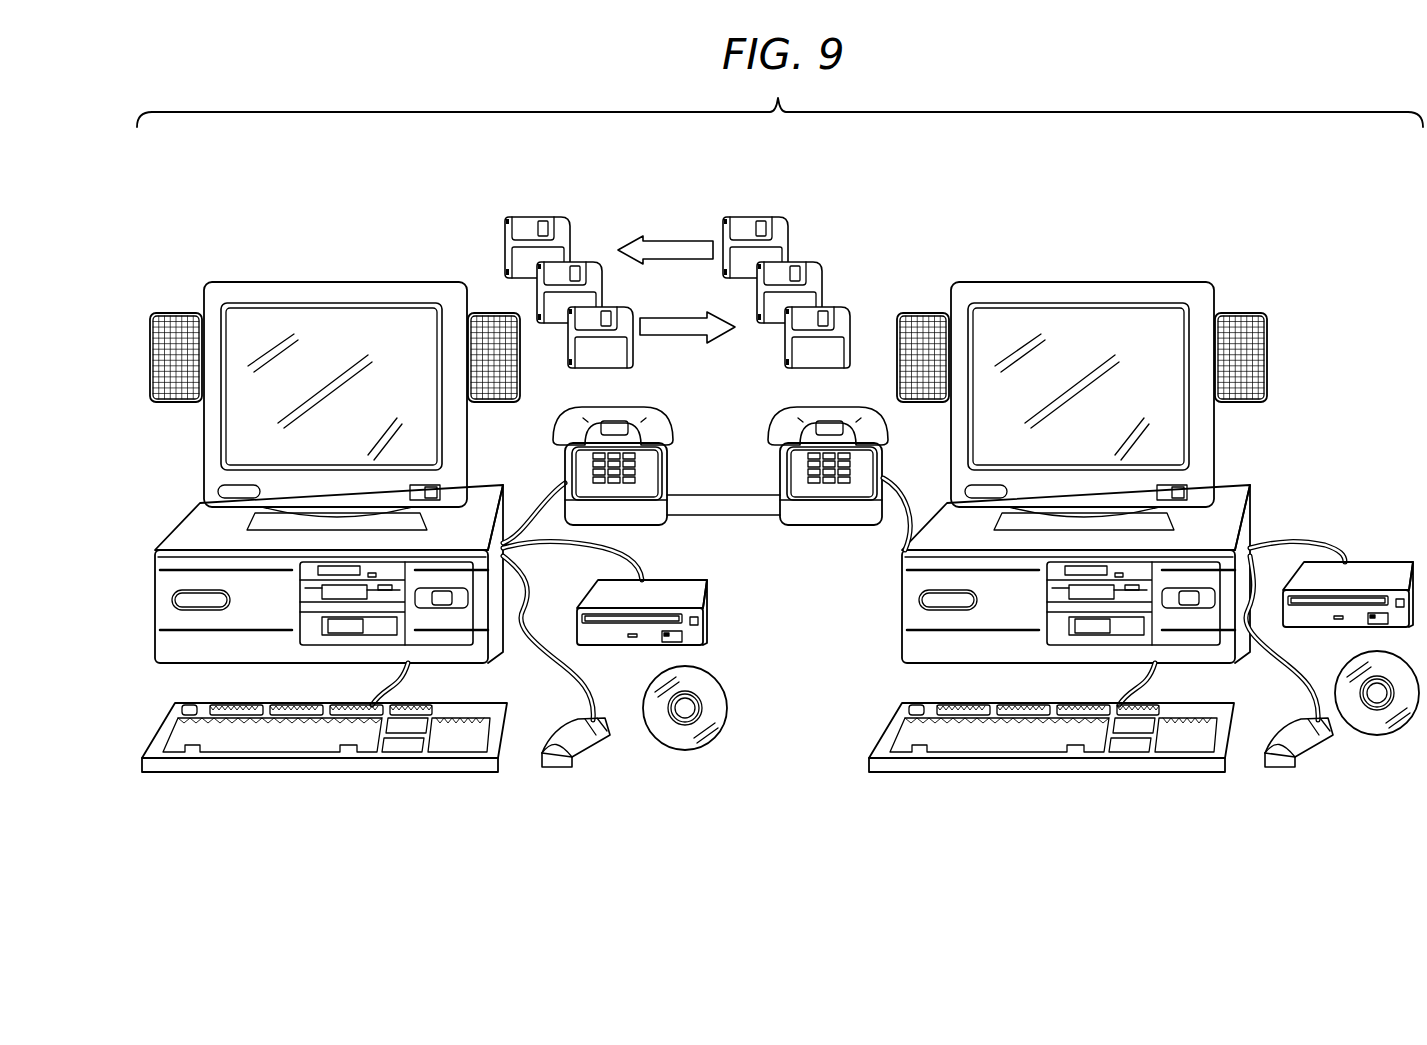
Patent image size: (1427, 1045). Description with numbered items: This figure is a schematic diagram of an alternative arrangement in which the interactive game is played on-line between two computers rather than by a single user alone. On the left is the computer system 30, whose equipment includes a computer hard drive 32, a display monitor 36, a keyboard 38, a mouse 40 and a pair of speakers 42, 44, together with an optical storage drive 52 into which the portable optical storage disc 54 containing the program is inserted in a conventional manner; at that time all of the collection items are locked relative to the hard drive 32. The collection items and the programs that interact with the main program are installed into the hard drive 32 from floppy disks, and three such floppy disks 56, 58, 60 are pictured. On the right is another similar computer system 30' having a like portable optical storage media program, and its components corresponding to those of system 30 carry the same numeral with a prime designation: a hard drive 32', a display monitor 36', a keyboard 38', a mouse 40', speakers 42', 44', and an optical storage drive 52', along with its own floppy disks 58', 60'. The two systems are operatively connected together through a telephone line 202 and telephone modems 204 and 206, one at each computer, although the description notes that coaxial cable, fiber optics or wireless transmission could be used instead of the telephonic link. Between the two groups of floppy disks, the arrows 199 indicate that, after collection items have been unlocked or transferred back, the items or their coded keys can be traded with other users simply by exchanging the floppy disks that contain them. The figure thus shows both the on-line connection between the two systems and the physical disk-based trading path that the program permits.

The computer system 30 is at (389, 478).
The second computer system 30' is at (1066, 485).
The computer hard drive 32 is at (320, 572).
The computer hard drive 32' is at (1030, 574).
The display monitor 36 is at (335, 376).
The display monitor 36' is at (1082, 373).
The keyboard 38 is at (324, 756).
The keyboard 38' is at (1011, 737).
The mouse 40 is at (561, 759).
The mouse 40' is at (1284, 759).
The speaker 42 is at (169, 384).
The speaker 42' is at (923, 384).
The speaker 44 is at (497, 379).
The speaker 44' is at (1276, 357).
The optical storage drive 52 is at (650, 585).
The optical storage drive 52' is at (1349, 566).
The optical storage disk 54 is at (685, 738).
The floppy disk 56 is at (563, 226).
The floppy disk 58 is at (580, 269).
The floppy disk 58' is at (819, 279).
The floppy disk 60 is at (613, 321).
The floppy disk 60' is at (849, 322).
The arrows 199 is at (677, 248).
The telephone line 202 is at (735, 506).
The telephone modem 204 is at (672, 472).
The telephone modem 206 is at (782, 488).